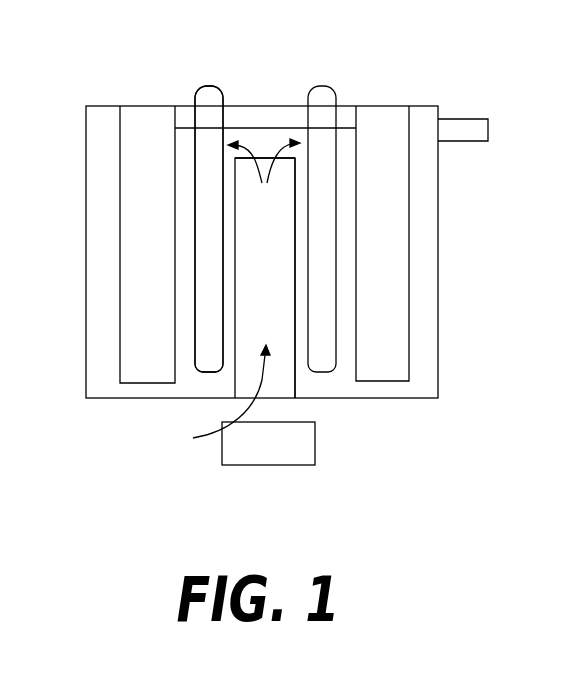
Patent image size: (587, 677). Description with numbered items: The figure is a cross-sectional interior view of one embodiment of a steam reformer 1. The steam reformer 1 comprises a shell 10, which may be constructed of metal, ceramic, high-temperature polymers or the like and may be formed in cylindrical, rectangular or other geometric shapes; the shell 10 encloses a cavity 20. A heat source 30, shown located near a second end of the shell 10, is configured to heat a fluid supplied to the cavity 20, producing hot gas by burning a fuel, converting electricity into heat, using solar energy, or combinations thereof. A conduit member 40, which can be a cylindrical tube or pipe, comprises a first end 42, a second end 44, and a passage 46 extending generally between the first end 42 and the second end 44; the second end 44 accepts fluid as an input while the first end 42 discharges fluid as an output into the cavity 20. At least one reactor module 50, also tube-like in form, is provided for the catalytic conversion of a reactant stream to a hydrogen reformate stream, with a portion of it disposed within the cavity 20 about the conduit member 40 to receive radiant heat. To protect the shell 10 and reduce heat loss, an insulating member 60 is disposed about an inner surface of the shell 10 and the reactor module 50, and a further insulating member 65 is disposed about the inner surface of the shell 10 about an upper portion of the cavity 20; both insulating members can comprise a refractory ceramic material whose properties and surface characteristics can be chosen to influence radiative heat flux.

The steam reformer 1 is at (463, 92).
The shell 10 is at (473, 188).
The cavity 20 is at (276, 133).
The heat source 30 is at (270, 467).
The conduit member 40 is at (295, 282).
The first end 42 is at (235, 160).
The second end 44 is at (296, 398).
The passage 46 is at (288, 237).
The reactor module 50 is at (208, 277).
The insulating member 60 is at (137, 343).
The insulating member 65 is at (236, 110).